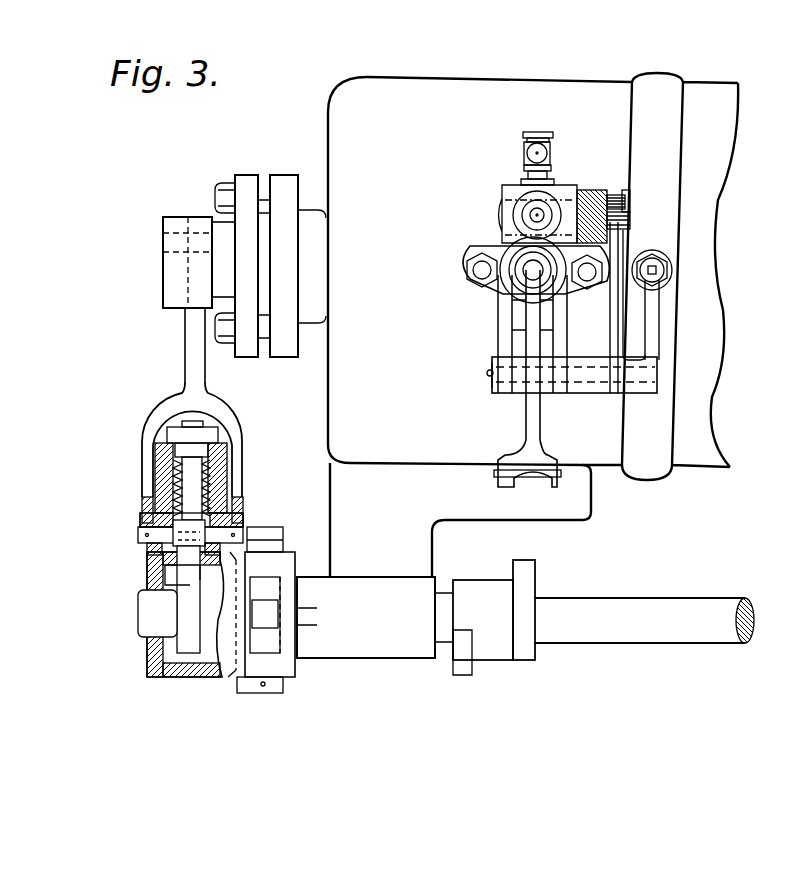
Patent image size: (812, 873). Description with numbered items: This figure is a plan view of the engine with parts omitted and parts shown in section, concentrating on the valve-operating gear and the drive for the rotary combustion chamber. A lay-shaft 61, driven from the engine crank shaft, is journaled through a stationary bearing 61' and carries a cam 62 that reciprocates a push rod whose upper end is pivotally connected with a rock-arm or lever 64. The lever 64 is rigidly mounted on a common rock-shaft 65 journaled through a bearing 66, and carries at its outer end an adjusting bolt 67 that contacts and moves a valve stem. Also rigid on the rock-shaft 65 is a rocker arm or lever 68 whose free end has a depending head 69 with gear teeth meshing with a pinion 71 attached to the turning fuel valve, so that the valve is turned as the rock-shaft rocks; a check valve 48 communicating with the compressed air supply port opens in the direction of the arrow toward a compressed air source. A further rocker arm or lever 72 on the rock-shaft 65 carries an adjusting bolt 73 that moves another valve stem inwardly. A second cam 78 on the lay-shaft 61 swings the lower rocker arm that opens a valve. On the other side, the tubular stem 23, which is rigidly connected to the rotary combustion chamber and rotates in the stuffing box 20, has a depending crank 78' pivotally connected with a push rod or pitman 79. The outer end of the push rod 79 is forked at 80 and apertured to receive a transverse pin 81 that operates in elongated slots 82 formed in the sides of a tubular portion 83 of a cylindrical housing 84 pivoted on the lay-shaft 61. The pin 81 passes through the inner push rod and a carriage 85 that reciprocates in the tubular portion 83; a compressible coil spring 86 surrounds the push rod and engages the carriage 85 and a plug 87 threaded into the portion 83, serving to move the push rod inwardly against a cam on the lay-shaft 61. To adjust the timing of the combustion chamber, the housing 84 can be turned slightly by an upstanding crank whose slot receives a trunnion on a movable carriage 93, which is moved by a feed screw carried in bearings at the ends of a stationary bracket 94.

The adjusting bolt 73 is at (412, 69).
The stuffing box 20 is at (251, 175).
The tubular stem 23 is at (222, 240).
The depending crank 78' is at (160, 262).
The push rod or pitman 79 is at (186, 346).
The forked end 80 is at (142, 460).
The plug 87 is at (157, 443).
The tubular portion 83 is at (227, 456).
The compressible coil spring 86 is at (212, 486).
The elongated slots 82 is at (163, 515).
The transverse pin 81 is at (140, 534).
The housing 84 is at (150, 687).
The carriage 85 is at (150, 556).
The stationary bracket 94 is at (295, 674).
The movable carriage 93 is at (271, 695).
The stationary bearing 61' is at (375, 599).
The cam 78 is at (483, 654).
The cam 62 is at (540, 568).
The lay-shaft 61 is at (644, 599).
The check valve 48 is at (563, 167).
The pinion 71 is at (630, 205).
The depending head 69 is at (604, 223).
The adjusting bolt 67 is at (530, 273).
The rocker arm or lever 72 is at (655, 300).
The rocker arm or lever 68 is at (615, 332).
The bearing 66 is at (498, 339).
The rock-arm or lever 64 is at (541, 429).
The common rock-shaft 65 is at (492, 374).